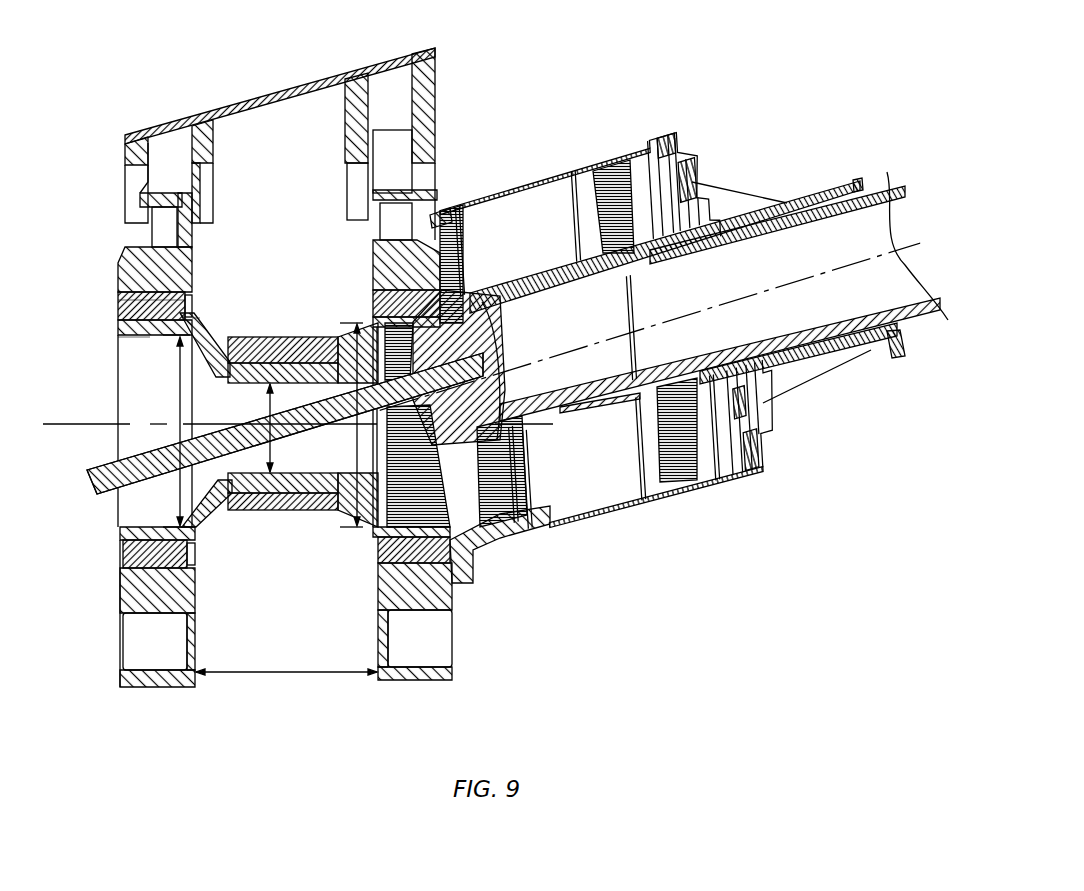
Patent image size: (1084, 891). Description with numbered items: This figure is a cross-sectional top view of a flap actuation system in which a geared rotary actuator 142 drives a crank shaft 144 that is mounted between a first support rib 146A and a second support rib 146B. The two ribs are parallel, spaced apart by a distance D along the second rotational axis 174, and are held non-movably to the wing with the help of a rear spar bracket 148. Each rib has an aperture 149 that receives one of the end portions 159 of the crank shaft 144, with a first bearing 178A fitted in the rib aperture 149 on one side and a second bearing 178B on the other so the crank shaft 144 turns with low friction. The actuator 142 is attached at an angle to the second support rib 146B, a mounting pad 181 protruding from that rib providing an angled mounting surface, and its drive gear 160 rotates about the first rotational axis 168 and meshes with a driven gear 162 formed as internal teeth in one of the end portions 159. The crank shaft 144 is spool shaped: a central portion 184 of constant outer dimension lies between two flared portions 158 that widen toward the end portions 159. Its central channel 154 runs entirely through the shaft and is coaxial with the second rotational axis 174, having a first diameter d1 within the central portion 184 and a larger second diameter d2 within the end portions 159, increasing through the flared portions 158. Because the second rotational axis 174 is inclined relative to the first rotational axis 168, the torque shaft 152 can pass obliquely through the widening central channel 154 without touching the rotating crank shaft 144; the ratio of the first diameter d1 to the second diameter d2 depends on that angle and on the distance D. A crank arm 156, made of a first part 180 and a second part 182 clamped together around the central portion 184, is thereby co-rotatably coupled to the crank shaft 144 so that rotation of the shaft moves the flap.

The geared rotary actuator 142 is at (657, 130).
The crank shaft 144 is at (197, 316).
The first support rib 146A is at (125, 280).
The second support rib 146B is at (400, 253).
The rear spar bracket 148 is at (433, 62).
The apertures 149 is at (148, 302).
The torque shaft 152 is at (88, 470).
The central channel 154 is at (150, 399).
The crank arm 156 is at (273, 512).
The flared portions 158 is at (210, 330).
The end portions 159 is at (150, 338).
The drive gear 160 is at (463, 432).
The driven gear 162 is at (487, 300).
The first rotational axis 168 is at (87, 487).
The second rotational axis 174 is at (130, 426).
The first bearing 178A is at (133, 312).
The second bearing 178B is at (420, 300).
The first part 180 is at (306, 502).
The mounting pad 181 is at (483, 543).
The second part 182 is at (268, 352).
The central portion 184 is at (305, 362).
The first diameter d1 is at (270, 382).
The second diameter d2 is at (178, 372).
The distance D is at (262, 675).